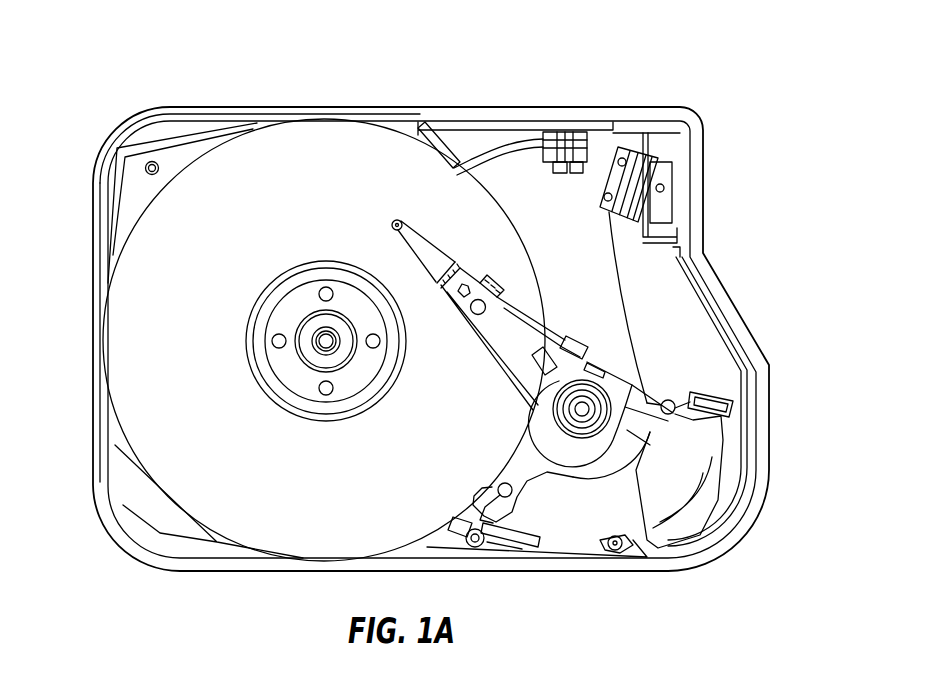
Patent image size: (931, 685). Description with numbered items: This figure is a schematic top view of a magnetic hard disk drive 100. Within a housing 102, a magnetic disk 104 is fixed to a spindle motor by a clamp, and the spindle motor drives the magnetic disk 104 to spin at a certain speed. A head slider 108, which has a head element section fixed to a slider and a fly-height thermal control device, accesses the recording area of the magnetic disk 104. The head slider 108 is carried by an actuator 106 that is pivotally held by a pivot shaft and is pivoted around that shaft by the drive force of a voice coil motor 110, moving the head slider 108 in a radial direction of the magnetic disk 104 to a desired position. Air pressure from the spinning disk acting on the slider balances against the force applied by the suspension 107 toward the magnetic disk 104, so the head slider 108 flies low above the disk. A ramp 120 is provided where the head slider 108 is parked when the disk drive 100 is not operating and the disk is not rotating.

The magnetic hard disk drive 100 is at (410, 88).
The housing 102 is at (698, 168).
The magnetic disk 104 is at (276, 160).
The actuator 106 is at (587, 310).
The suspension 107 is at (474, 267).
The head slider 108 is at (393, 225).
The voice coil motor 110 is at (664, 486).
The ramp 120 is at (543, 128).